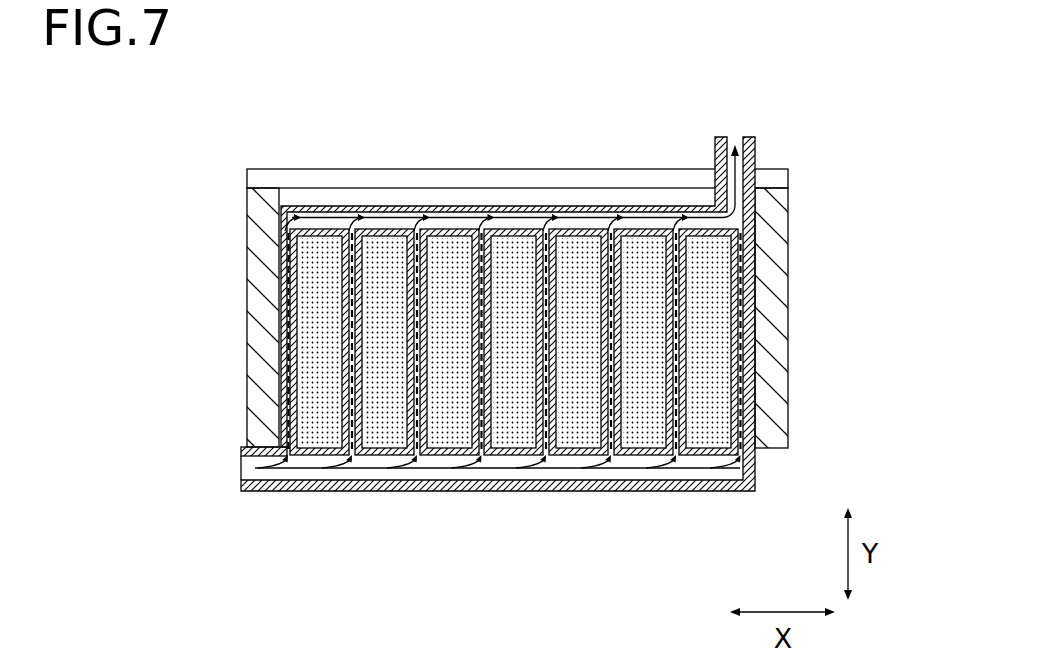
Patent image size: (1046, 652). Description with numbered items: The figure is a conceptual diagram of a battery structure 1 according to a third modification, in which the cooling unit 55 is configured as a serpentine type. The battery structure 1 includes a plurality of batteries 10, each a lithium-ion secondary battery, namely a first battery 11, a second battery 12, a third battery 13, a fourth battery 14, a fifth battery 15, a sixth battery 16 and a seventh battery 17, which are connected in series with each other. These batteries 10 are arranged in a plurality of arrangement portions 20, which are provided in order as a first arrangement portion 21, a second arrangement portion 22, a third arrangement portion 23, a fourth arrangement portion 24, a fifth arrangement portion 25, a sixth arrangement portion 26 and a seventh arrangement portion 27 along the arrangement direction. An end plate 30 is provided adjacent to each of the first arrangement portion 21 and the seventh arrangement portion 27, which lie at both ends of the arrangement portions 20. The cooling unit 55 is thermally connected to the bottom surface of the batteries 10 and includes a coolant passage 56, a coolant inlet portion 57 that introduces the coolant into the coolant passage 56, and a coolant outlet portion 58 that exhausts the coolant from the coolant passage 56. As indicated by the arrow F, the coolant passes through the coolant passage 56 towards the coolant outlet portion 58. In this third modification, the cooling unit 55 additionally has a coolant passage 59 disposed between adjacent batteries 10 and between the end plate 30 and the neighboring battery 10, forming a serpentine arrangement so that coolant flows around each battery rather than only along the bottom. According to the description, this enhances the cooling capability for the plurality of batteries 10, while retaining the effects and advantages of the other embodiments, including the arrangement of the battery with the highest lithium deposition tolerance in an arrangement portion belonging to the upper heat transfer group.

The battery structure 1 is at (742, 78).
The battery 10 is at (512, 248).
The first battery 11 is at (323, 234).
The second battery 12 is at (388, 234).
The third battery 13 is at (451, 234).
The fourth battery 14 is at (514, 234).
The fifth battery 15 is at (578, 234).
The sixth battery 16 is at (641, 234).
The seventh battery 17 is at (704, 274).
The arrangement portion 20 is at (514, 535).
The first arrangement portion 21 is at (318, 458).
The second arrangement portion 22 is at (382, 458).
The third arrangement portion 23 is at (446, 458).
The fourth arrangement portion 24 is at (510, 458).
The fifth arrangement portion 25 is at (574, 458).
The sixth arrangement portion 26 is at (638, 458).
The seventh arrangement portion 27 is at (700, 512).
The end plate 30 is at (270, 213).
The cooling unit 55 is at (253, 447).
The coolant passage 56 is at (283, 482).
The coolant inlet portion 57 is at (242, 467).
The coolant outlet portion 58 is at (745, 138).
The coolant passage 59 is at (288, 357).
The arrow F is at (741, 190).